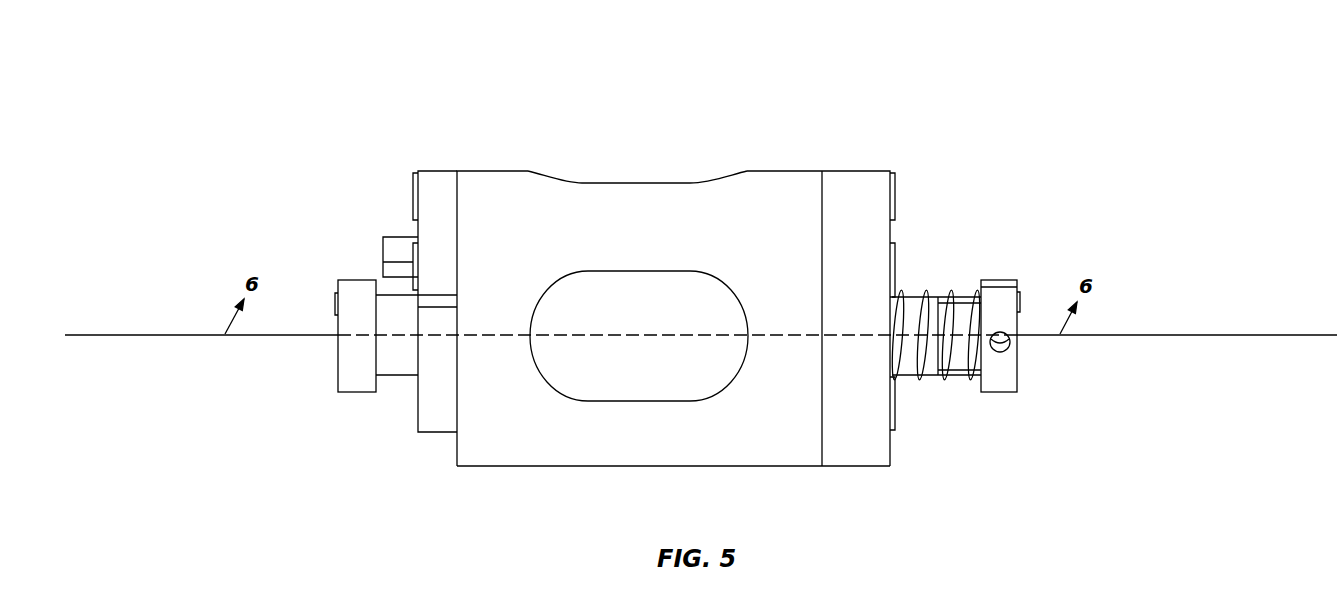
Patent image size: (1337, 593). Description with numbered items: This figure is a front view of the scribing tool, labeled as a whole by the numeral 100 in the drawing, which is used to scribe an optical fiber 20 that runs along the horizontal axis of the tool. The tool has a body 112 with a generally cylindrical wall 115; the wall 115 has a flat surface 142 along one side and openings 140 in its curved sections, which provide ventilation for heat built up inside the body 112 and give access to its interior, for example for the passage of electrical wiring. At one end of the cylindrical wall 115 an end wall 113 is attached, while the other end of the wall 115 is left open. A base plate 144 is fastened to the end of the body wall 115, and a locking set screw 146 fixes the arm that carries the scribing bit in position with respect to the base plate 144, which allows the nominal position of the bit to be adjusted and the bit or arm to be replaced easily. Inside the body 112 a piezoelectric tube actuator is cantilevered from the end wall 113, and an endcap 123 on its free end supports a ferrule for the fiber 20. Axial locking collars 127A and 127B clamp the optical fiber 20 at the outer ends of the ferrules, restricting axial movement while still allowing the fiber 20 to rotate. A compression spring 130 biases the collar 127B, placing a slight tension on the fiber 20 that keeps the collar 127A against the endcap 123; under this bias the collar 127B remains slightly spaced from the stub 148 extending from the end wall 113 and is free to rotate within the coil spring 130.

The tool assembly 100 is at (800, 72).
The optical fiber 20 is at (1125, 335).
The body 112 is at (863, 162).
The end wall 113 is at (878, 450).
The cylindrical wall 115 is at (767, 453).
The endcap 123 is at (432, 430).
The axial locking collar 127A is at (345, 392).
The axial locking collar 127B is at (1003, 280).
The compression spring 130 is at (952, 298).
The openings 140 is at (687, 163).
The flat surface 142 is at (645, 469).
The base plate 144 is at (437, 183).
The locking set screw 146 is at (388, 250).
The stub 148 is at (912, 302).